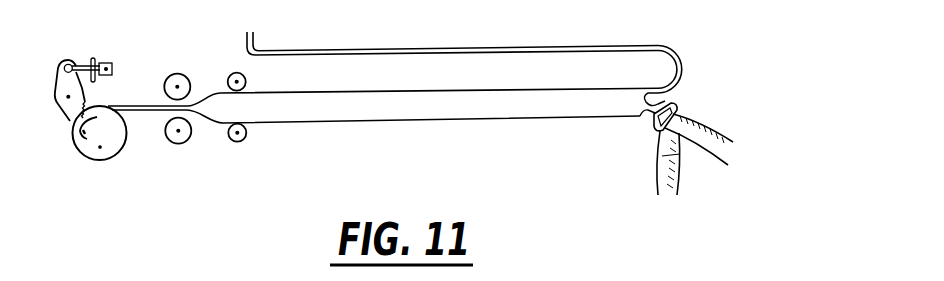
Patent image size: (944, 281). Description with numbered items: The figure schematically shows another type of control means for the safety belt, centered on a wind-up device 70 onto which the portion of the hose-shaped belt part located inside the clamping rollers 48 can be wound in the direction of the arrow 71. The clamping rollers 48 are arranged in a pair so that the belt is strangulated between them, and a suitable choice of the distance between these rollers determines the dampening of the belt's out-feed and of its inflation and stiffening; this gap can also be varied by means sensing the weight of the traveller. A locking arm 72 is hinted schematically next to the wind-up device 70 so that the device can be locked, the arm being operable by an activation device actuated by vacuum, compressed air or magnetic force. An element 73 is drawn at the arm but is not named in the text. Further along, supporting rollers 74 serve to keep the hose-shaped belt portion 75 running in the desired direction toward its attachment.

The clamping rollers 48 is at (172, 73).
The wind-up device 70 is at (98, 148).
The arrow 71 is at (75, 127).
The locking arm 72 is at (58, 86).
The adjusting screw 73 is at (96, 57).
The supporting rollers 74 is at (246, 80).
The hose shaped belt portion 75 is at (430, 108).